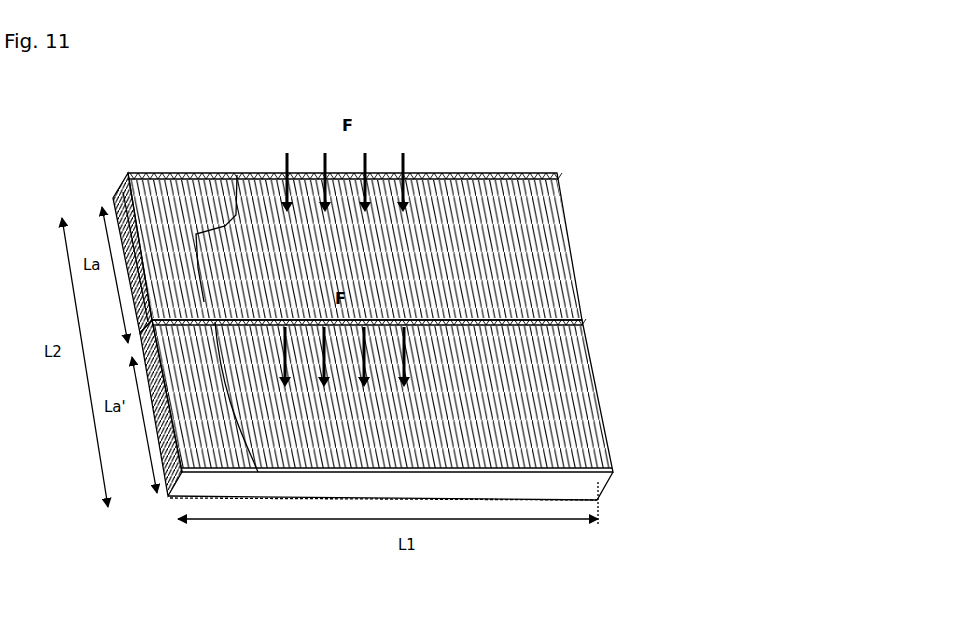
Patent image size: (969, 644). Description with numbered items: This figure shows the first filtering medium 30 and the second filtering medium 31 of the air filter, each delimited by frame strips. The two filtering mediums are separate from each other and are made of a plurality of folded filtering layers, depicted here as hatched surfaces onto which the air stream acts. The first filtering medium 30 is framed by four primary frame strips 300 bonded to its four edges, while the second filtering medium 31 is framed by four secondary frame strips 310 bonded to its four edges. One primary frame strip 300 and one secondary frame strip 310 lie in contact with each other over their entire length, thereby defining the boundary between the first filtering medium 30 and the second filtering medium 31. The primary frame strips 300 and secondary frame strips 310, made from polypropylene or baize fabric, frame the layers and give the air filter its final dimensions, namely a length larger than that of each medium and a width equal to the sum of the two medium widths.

The first filtering medium 30 is at (505, 138).
The primary frame strips 300 is at (147, 172).
The secondary frame strips 310 is at (591, 367).
The second filtering medium 31 is at (507, 385).